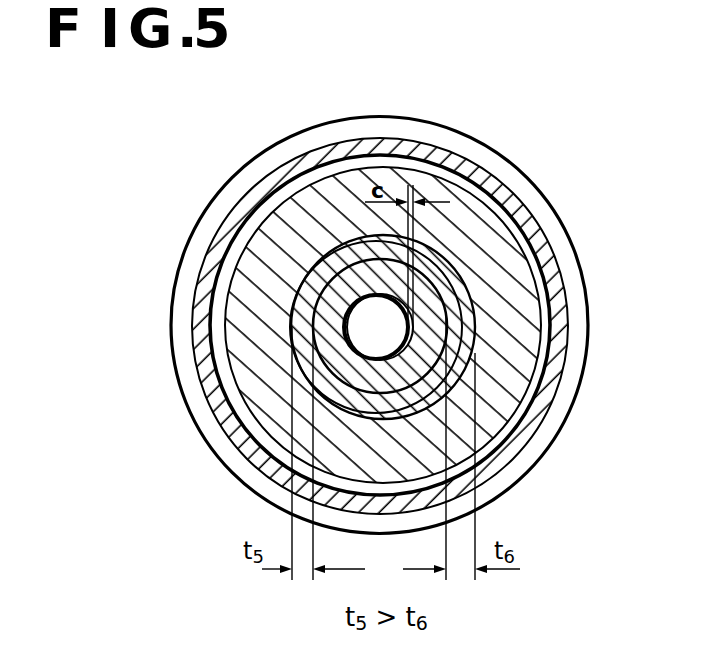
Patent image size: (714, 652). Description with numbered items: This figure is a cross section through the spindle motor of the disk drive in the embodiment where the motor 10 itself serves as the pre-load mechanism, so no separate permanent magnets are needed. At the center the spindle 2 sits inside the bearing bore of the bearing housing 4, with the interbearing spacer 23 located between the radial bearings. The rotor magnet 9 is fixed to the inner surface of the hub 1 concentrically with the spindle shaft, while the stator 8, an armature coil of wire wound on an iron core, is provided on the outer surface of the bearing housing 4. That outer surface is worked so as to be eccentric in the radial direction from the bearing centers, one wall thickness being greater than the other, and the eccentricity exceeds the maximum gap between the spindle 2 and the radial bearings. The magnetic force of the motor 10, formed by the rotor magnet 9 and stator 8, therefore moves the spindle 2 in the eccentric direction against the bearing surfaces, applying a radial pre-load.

The hub 1 is at (480, 150).
The spindle 2 is at (343, 333).
The bearing housing 4 is at (465, 317).
The stator 8 is at (503, 238).
The rotor magnet 9 is at (507, 204).
The motor 10 is at (423, 323).
The interbearing spacer 23 is at (342, 291).